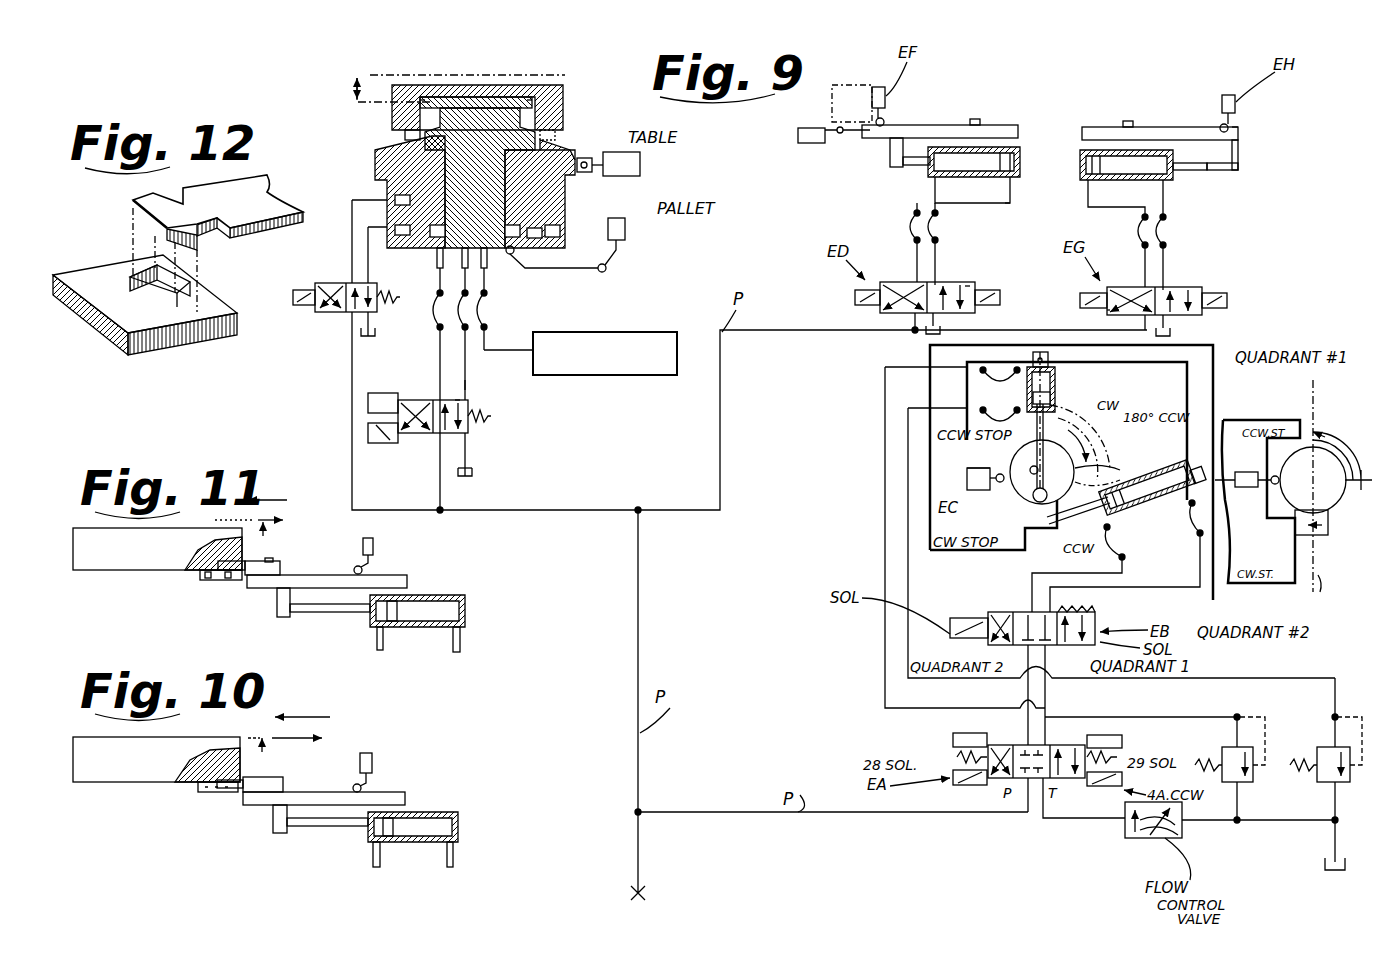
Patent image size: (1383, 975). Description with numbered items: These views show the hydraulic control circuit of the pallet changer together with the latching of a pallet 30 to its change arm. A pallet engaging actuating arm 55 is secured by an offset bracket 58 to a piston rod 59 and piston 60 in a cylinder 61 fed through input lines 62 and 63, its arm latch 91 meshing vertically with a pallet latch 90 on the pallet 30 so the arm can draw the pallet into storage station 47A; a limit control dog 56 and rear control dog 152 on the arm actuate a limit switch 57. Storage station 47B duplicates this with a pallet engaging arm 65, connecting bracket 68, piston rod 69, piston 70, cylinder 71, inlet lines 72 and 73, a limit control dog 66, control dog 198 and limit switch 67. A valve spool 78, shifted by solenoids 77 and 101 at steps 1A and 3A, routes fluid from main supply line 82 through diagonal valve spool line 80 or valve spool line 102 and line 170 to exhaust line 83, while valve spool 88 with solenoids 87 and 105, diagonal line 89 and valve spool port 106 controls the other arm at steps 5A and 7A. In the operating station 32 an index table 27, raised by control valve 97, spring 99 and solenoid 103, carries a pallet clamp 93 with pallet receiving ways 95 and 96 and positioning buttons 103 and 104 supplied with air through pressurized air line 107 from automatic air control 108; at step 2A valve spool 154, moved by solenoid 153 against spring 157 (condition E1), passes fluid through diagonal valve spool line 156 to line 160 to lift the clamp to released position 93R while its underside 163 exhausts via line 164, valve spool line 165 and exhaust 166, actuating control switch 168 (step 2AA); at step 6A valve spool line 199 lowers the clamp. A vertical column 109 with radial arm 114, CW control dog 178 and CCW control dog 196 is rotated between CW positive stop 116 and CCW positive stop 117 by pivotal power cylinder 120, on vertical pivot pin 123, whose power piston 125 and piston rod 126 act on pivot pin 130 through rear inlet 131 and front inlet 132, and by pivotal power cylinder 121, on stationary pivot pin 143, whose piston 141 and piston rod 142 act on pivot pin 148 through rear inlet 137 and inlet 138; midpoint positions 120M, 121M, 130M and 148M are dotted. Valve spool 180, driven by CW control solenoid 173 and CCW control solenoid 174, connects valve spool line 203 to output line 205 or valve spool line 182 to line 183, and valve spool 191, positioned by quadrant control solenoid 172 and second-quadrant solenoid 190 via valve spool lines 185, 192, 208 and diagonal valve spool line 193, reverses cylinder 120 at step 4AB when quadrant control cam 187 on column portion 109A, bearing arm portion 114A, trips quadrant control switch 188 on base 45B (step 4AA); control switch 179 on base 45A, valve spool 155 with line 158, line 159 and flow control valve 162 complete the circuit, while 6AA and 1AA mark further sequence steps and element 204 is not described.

In FIG. 11, the pallet 30 is at (105, 553).
In FIG. 10, the pallet 30 is at (107, 765).
In FIG. 9, the pallet 30 is at (392, 104).
In FIG. 12, the arm latch 91 is at (262, 192).
In FIG. 11, the arm latch 91 is at (262, 572).
In FIG. 10, the arm latch 91 is at (258, 788).
In FIG. 12, the pallet latch 90 is at (115, 272).
In FIG. 11, the pallet latch 90 is at (220, 585).
In FIG. 10, the pallet latch 90 is at (215, 795).
In FIG. 9, the pallet clamp 93 is at (470, 96).
In FIG. 9, the released position of pallet clamp 93R is at (480, 97).
In FIG. 9, the pallet receiving way 95 is at (428, 98).
In FIG. 9, the pallet receiving way 96 is at (531, 98).
In FIG. 9, the operating station 32 is at (505, 78).
In FIG. 9, the positioning button / solenoid 103 is at (405, 135).
In FIG. 9, the positioning button 104 is at (555, 135).
In FIG. 9, the index table 27 is at (387, 172).
In FIG. 9, the pressurized air line 107 is at (588, 173).
In FIG. 9, the underside of pallet clamp 163 is at (545, 220).
In FIG. 9, the line 164 is at (437, 258).
In FIG. 10, the sequence step identifier 6AA is at (378, 752).
In FIG. 9, the sequence step identifier 6AA is at (630, 216).
In FIG. 9, the control switch 168 is at (626, 230).
In FIG. 9, the sequence step identifier 2AA is at (640, 252).
In FIG. 9, the control valve 97 is at (336, 312).
In FIG. 9, the spring 99 is at (390, 299).
In FIG. 9, the main supply line 82 is at (352, 353).
In FIG. 9, the automatic air control 108 is at (620, 375).
In FIG. 9, the valve spool 154 is at (416, 398).
In FIG. 9, the valve spool line 165 is at (390, 386).
In FIG. 9, the solenoid 153 is at (380, 443).
In FIG. 9, the diagonal valve spool line 156 is at (414, 434).
In FIG. 9, the sequence step identifier 6A is at (366, 415).
In FIG. 9, the sequence step identifier 2A is at (366, 441).
In FIG. 9, the valve spool line 199 is at (466, 392).
In FIG. 9, the line 160 is at (462, 401).
In FIG. 9, the spring 157 is at (492, 417).
In FIG. 9, the starting condition identifier E1 is at (478, 432).
In FIG. 9, the exhaust 166 is at (473, 471).
In FIG. 11, the limit switch 57 is at (363, 548).
In FIG. 10, the limit switch 57 is at (366, 752).
In FIG. 9, the limit switch 57 is at (877, 86).
In FIG. 9, the limit control dog 56 is at (850, 133).
In FIG. 11, the pallet engaging actuating arm 55 is at (402, 590).
In FIG. 10, the pallet engaging actuating arm 55 is at (380, 797).
In FIG. 9, the pallet engaging actuating arm 55 is at (905, 125).
In FIG. 11, the rear control dog 152 is at (370, 574).
In FIG. 9, the rear control dog 152 is at (975, 119).
In FIG. 11, the offset bracket 58 is at (277, 605).
In FIG. 10, the offset bracket 58 is at (275, 825).
In FIG. 9, the offset bracket 58 is at (890, 158).
In FIG. 9, the pallet storage station 47A is at (862, 172).
In FIG. 11, the piston rod 59 is at (300, 614).
In FIG. 10, the piston rod 59 is at (295, 830).
In FIG. 9, the piston rod 59 is at (905, 164).
In FIG. 11, the piston 60 is at (400, 620).
In FIG. 10, the piston 60 is at (397, 838).
In FIG. 9, the piston 60 is at (1018, 162).
In FIG. 11, the cylinder 61 is at (420, 640).
In FIG. 10, the cylinder 61 is at (422, 812).
In FIG. 9, the cylinder 61 is at (950, 180).
In FIG. 11, the input line 62 is at (377, 645).
In FIG. 10, the input line 62 is at (375, 852).
In FIG. 9, the input line 62 is at (933, 192).
In FIG. 11, the input line 63 is at (460, 647).
In FIG. 10, the input line 63 is at (455, 858).
In FIG. 9, the input line 63 is at (1012, 190).
In FIG. 9, the line 170 is at (938, 241).
In FIG. 9, the valve spool 78 is at (900, 280).
In FIG. 9, the solenoid 77 is at (855, 296).
In FIG. 9, the sequence step identifier 3A is at (850, 300).
In FIG. 9, the valve spool line 102 is at (946, 282).
In FIG. 9, the solenoid 101 is at (970, 290).
In FIG. 9, the sequence step identifier 1A is at (993, 306).
In FIG. 9, the diagonal valve spool line 80 is at (913, 320).
In FIG. 9, the exhaust line 83 is at (942, 322).
In FIG. 9, the pallet engaging arm 65 is at (1150, 127).
In FIG. 9, the control dog 198 is at (1128, 121).
In FIG. 9, the limit switch 67 is at (1228, 95).
In FIG. 9, the limit control dog 66 is at (1238, 128).
In FIG. 9, the connecting bracket 68 is at (1238, 156).
In FIG. 9, the pallet storage station 47B is at (1240, 162).
In FIG. 9, the piston rod 69 is at (1190, 172).
In FIG. 9, the piston 70 is at (1090, 162).
In FIG. 9, the cylinder 71 is at (1100, 181).
In FIG. 9, the inlet line 72 is at (1166, 196).
In FIG. 9, the inlet line 73 is at (1088, 208).
In FIG. 9, the valve spool 88 is at (1133, 285).
In FIG. 9, the sequence step identifier 7A is at (1080, 285).
In FIG. 9, the solenoid 87 is at (1080, 301).
In FIG. 9, the diagonal line 89 is at (1104, 310).
In FIG. 9, the valve spool port 106 is at (1166, 287).
In FIG. 9, the sequence step identifier 5A is at (1212, 288).
In FIG. 9, the solenoid 105 is at (1228, 301).
In FIG. 9, the work changer base 45A is at (930, 528).
In FIG. 9, the piston 141 is at (983, 372).
In FIG. 9, the CCW positive stop 117 is at (1008, 414).
In FIG. 9, the stationary pivot pin 143 is at (1050, 360).
In FIG. 9, the pivotal power cylinder 121 is at (1057, 383).
In FIG. 9, the vertical column 109 is at (1033, 495).
In FIG. 9, the pivot pin 148 is at (1042, 472).
In FIG. 9, the CW control dog 178 is at (1032, 475).
In FIG. 9, the piston rod 142 is at (1020, 462).
In FIG. 9, the midpoint position of cylinder 121 121M is at (1070, 420).
In FIG. 9, the midpoint position of pivot pin 148 148M is at (1105, 452).
In FIG. 9, the CCW control dog 196 is at (1108, 466).
In FIG. 9, the midpoint position of cylinder 120 120M is at (1125, 480).
In FIG. 9, the vertical pivot pin 123 is at (1200, 468).
In FIG. 9, the midpoint position of pivot pin 130 130M is at (1147, 488).
In FIG. 9, the pivot pin 130 is at (1032, 512).
In FIG. 9, the power piston 125 is at (1124, 555).
In FIG. 9, the pivotal power cylinder 120 is at (1195, 540).
In FIG. 9, the piston rod 126 is at (1095, 500).
In FIG. 9, the radial arm 114 is at (1040, 535).
In FIG. 9, the CW positive stop 116 is at (1025, 552).
In FIG. 9, the front inlet 132 is at (1030, 585).
In FIG. 9, the sequence step identifier 4AB is at (1000, 612).
In FIG. 9, the valve spool 191 is at (1045, 605).
In FIG. 9, the rear inlet 131 is at (1195, 580).
In FIG. 9, the control switch 179 is at (928, 457).
In FIG. 9, the rear inlet 137 is at (884, 478).
In FIG. 9, the inlet 138 is at (906, 494).
In FIG. 9, the valve spool line 185 is at (1032, 645).
In FIG. 9, the quadrant control solenoid 172 is at (1098, 618).
In FIG. 9, the valve spool line 208 is at (1028, 620).
In FIG. 9, the valve spool line 192 is at (968, 638).
In FIG. 9, the diagonal valve spool line 193 is at (1000, 646).
In FIG. 9, the quadrant No. 2 solenoid 190 is at (950, 626).
In FIG. 9, the valve spool 155 is at (1055, 742).
In FIG. 9, the solenoid 204 is at (992, 745).
In FIG. 9, the CW control solenoid 173 is at (953, 782).
In FIG. 9, the valve spool line 182 is at (1085, 745).
In FIG. 9, the line 158 is at (1090, 786).
In FIG. 9, the line 183 is at (1025, 693).
In FIG. 9, the output line 205 is at (1050, 712).
In FIG. 9, the valve spool line 203 is at (1005, 778).
In FIG. 9, the valve spool 180 is at (1038, 790).
In FIG. 9, the line 159 is at (1065, 820).
In FIG. 9, the CCW control solenoid 174 is at (1110, 790).
In FIG. 9, the flow control valve 162 is at (1127, 838).
In FIG. 9, the work changer base 45B is at (1252, 585).
In FIG. 9, the sequence step identifier 4AA is at (1228, 470).
In FIG. 9, the quadrant control switch 188 is at (1246, 487).
In FIG. 9, the column portion 109A is at (1327, 520).
In FIG. 9, the quadrant control cam 187 is at (1348, 448).
In FIG. 9, the radially extending arm portion 114A is at (1331, 585).
In FIG. 11, the sequence step identifier 1AA is at (388, 546).